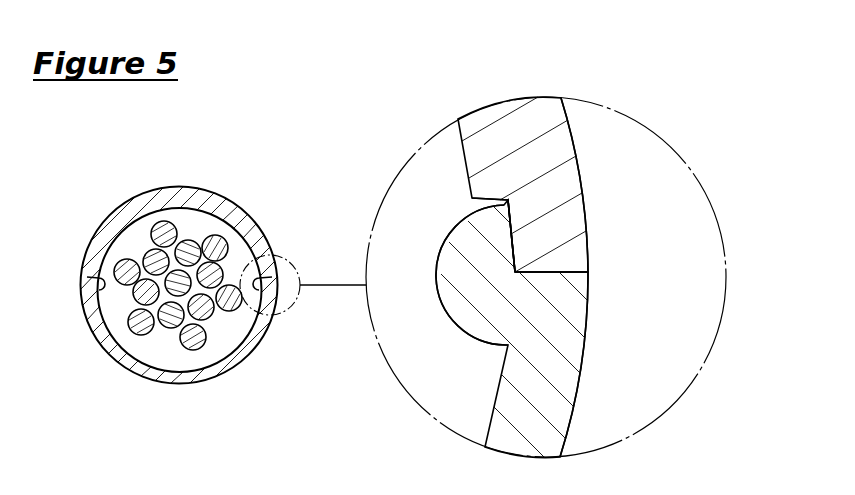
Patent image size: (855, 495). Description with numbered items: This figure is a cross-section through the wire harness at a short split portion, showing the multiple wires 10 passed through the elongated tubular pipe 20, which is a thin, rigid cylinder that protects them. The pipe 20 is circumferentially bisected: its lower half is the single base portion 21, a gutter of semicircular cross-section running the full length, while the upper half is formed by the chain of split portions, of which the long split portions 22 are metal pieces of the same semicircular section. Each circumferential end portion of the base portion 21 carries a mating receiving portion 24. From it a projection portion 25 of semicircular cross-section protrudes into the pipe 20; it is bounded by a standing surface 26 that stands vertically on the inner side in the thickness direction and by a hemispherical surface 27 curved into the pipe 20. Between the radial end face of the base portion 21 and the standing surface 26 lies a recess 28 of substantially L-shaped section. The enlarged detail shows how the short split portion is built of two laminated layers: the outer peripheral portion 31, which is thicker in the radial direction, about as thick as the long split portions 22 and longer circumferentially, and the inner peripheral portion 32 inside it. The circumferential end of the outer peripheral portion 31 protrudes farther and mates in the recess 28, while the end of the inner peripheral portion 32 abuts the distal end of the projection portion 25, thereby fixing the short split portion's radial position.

The wires 10 is at (188, 245).
The pipe 20 is at (103, 227).
The base portion 21 is at (180, 382).
The long split portions 22 is at (135, 195).
The mating receiving portions 24 is at (93, 279).
The projection portions 25 is at (470, 322).
The standing surface 26 is at (513, 222).
The hemispherical surface 27 is at (450, 237).
The recess 28 is at (540, 272).
The outer peripheral portion 31 is at (558, 110).
The inner peripheral portion 32 is at (462, 130).